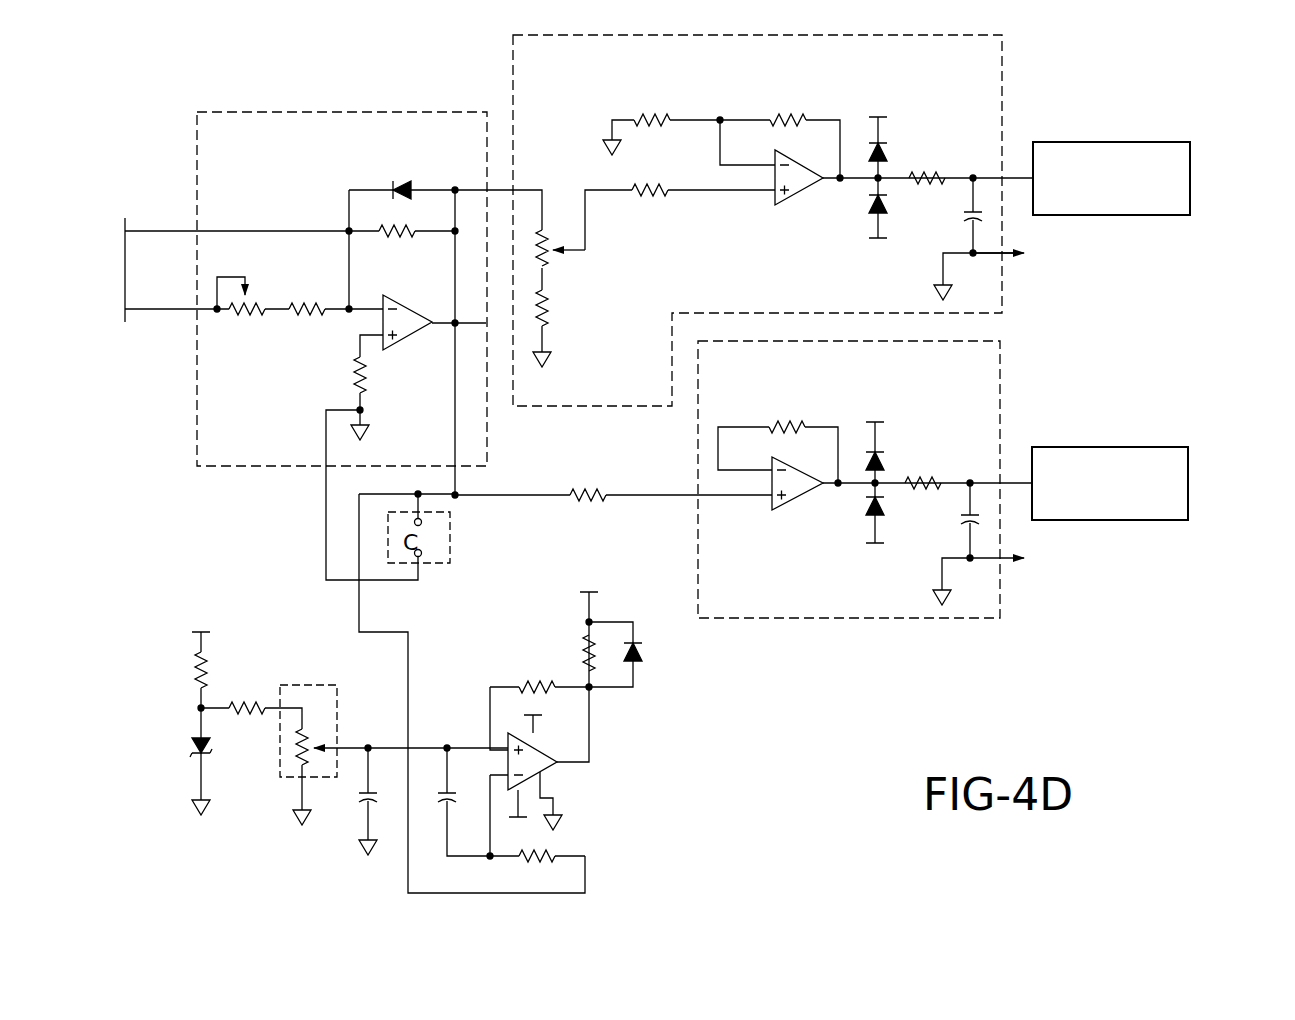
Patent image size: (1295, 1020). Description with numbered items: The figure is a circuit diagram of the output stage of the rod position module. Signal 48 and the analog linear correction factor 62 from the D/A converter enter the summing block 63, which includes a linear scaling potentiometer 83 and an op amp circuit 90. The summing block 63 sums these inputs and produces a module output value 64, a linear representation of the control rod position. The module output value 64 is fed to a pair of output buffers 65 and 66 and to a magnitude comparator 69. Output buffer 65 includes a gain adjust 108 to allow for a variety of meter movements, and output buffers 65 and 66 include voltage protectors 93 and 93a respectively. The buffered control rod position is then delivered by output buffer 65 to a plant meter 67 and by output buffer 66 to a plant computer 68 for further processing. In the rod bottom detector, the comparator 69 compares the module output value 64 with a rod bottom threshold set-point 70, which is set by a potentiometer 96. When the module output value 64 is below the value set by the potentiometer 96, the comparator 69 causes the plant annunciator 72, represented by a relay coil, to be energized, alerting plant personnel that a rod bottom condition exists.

The signal 48 is at (158, 231).
The analog linear correction factor 62 is at (158, 311).
The summing block 63 is at (394, 110).
The module output value 64 is at (440, 322).
The output buffer 65 is at (1005, 82).
The output buffer 66 is at (865, 622).
The plant meter 67 is at (1190, 172).
The plant computer 68 is at (1188, 475).
The comparator 69 is at (548, 773).
The rod bottom set-point 70 is at (350, 718).
The plant annunciator 72 is at (606, 663).
The linear scaling potentiometer 83 is at (264, 281).
The op amp circuit 90 is at (404, 363).
The voltage protector 93 is at (907, 142).
The voltage protector 93a is at (906, 452).
The potentiometer 96 is at (308, 751).
The gain adjust 108 is at (567, 270).